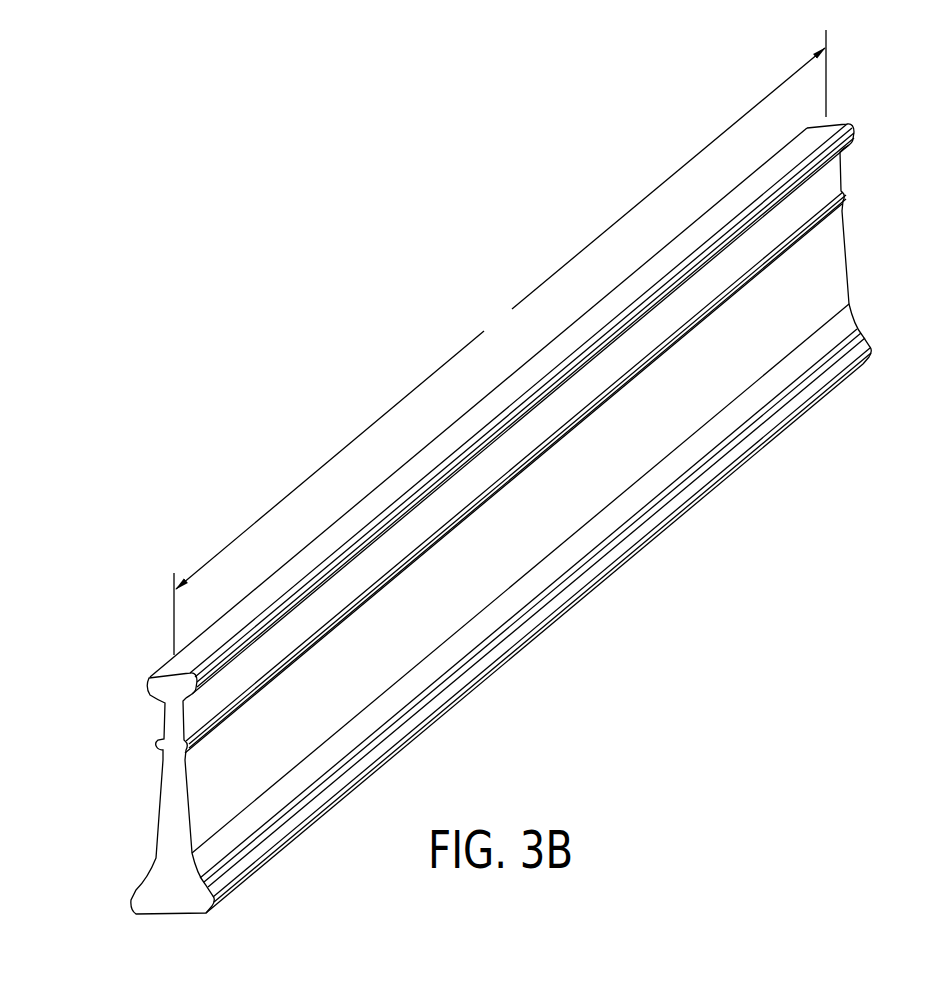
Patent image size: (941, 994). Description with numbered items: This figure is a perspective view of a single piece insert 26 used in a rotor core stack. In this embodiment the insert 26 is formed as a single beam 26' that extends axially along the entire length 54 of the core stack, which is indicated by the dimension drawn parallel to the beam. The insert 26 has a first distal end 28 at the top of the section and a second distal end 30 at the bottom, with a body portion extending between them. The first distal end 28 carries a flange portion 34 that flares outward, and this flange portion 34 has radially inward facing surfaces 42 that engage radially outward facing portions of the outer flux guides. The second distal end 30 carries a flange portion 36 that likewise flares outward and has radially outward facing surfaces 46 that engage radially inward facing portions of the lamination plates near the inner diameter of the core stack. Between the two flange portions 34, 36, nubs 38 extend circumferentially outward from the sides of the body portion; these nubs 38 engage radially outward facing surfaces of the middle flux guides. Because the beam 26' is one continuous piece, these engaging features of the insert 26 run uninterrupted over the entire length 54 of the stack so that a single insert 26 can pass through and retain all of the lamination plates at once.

The insert 26 is at (501, 519).
The single beam 26' is at (626, 535).
The first distal end 28 is at (330, 544).
The second distal end 30 is at (177, 916).
The flange portion 34 is at (172, 684).
The flange portion 36 is at (175, 900).
The nubs 38 is at (158, 749).
The radially inward facing surfaces 42 is at (822, 167).
The radially outward facing surfaces 46 is at (500, 640).
The entire length 54 is at (500, 342).